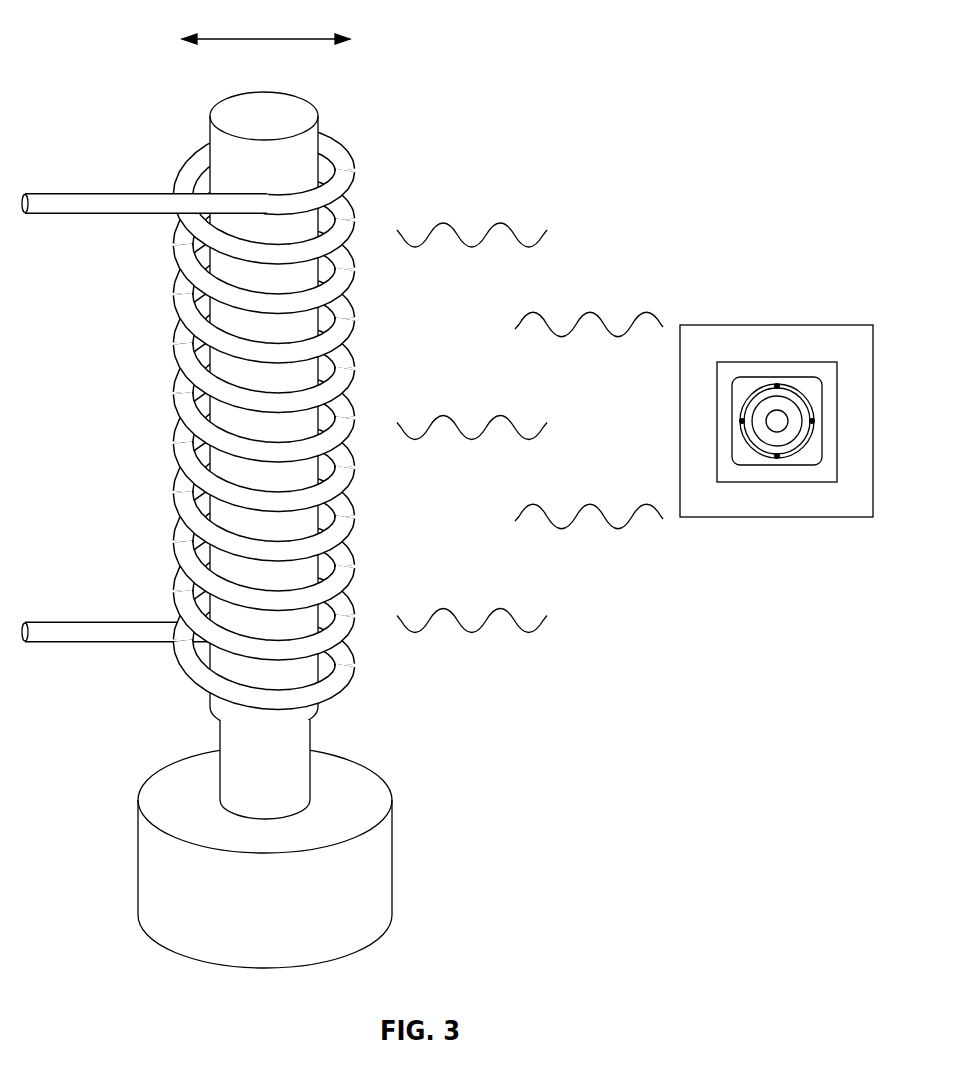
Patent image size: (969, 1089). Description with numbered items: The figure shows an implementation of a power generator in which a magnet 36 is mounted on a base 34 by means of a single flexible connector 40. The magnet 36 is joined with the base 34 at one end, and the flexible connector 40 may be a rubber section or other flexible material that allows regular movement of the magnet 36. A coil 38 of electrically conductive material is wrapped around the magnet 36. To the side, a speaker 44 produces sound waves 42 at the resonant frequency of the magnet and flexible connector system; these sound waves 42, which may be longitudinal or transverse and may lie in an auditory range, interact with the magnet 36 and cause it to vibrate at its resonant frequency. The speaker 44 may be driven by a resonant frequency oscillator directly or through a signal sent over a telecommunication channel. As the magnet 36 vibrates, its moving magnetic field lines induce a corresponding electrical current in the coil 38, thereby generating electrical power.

The base 34 is at (392, 855).
The magnet 36 is at (320, 127).
The coil 38 is at (223, 411).
The flexible connector 40 is at (311, 778).
The sound waves 42 is at (562, 530).
The speaker 44 is at (777, 324).